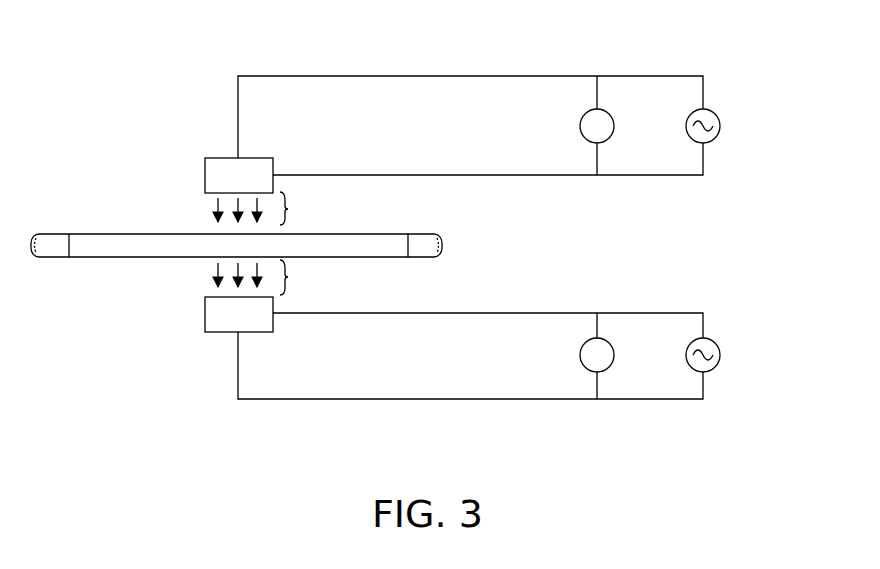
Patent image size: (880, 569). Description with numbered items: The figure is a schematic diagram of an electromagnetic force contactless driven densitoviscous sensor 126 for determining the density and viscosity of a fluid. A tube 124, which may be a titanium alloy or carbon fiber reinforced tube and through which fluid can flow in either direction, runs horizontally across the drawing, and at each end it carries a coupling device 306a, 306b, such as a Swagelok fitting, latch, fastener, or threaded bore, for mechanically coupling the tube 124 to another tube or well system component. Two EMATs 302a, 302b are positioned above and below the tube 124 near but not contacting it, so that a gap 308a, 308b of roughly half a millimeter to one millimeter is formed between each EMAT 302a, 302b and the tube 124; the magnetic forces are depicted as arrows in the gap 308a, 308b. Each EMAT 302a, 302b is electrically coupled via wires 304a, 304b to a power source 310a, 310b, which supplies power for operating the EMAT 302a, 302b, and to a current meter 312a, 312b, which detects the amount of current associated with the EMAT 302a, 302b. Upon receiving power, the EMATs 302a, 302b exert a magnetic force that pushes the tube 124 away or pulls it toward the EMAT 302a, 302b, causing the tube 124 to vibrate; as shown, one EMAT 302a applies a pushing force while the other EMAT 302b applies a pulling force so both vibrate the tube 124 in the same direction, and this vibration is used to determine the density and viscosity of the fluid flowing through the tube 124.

The densitoviscous sensor 126 is at (64, 77).
The tube 124 is at (236, 212).
The EMAT 302a is at (211, 174).
The EMAT 302b is at (211, 318).
The wires 304a is at (470, 92).
The wires 304b is at (470, 392).
The coupling device 306a is at (64, 271).
The coupling device 306b is at (435, 272).
The gap 308a is at (272, 208).
The gap 308b is at (272, 277).
The power source 310a is at (743, 134).
The power source 310b is at (744, 363).
The current meter 312a is at (555, 122).
The current meter 312b is at (555, 352).